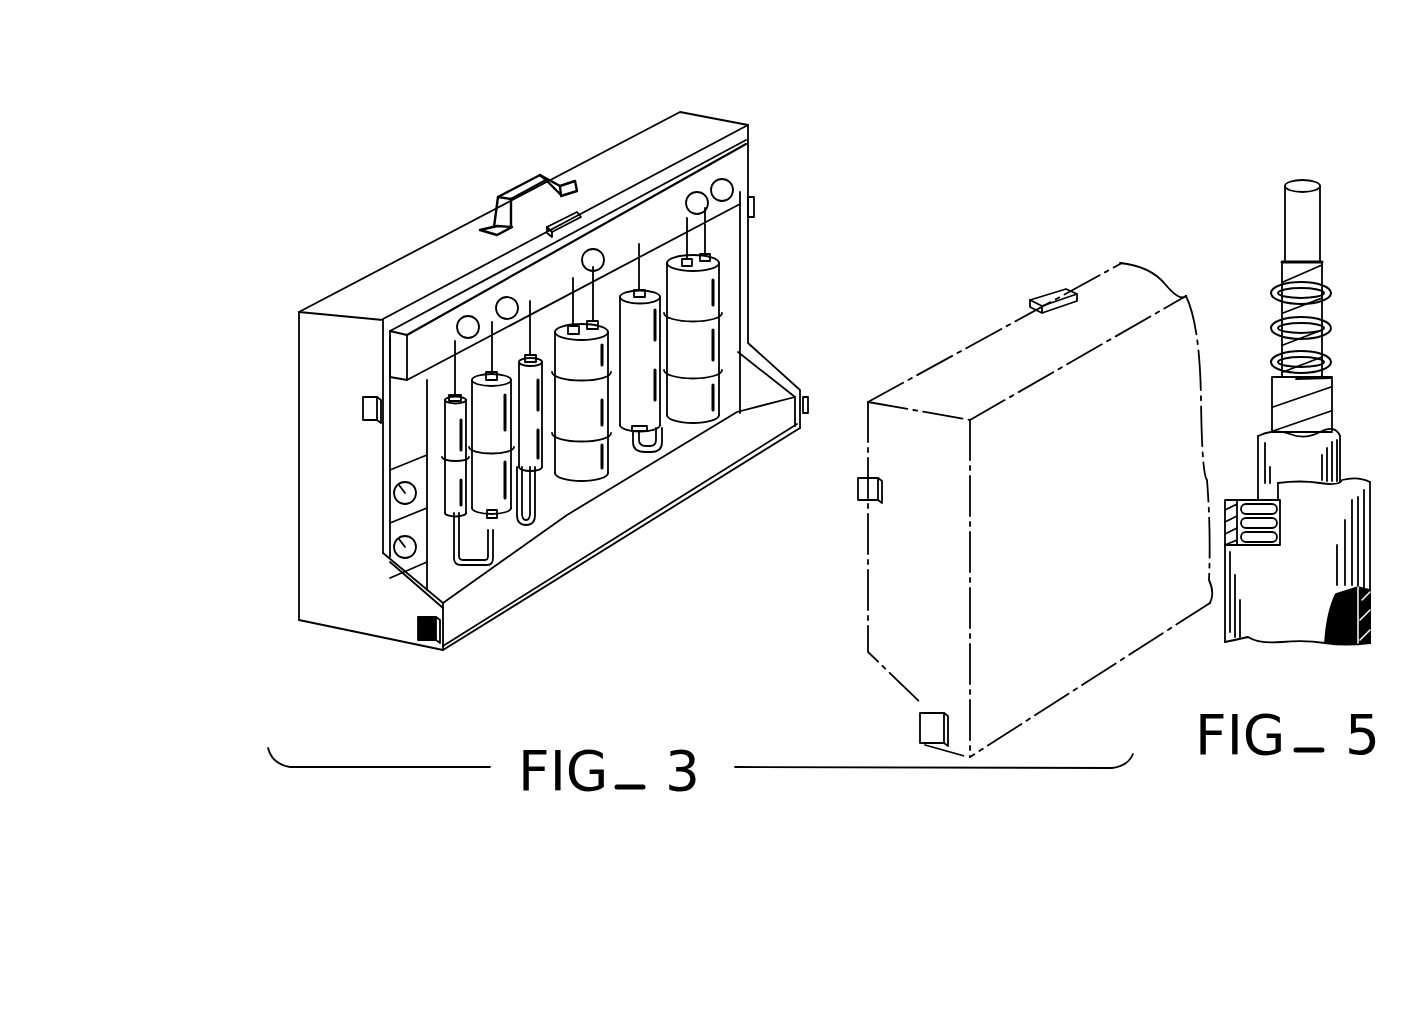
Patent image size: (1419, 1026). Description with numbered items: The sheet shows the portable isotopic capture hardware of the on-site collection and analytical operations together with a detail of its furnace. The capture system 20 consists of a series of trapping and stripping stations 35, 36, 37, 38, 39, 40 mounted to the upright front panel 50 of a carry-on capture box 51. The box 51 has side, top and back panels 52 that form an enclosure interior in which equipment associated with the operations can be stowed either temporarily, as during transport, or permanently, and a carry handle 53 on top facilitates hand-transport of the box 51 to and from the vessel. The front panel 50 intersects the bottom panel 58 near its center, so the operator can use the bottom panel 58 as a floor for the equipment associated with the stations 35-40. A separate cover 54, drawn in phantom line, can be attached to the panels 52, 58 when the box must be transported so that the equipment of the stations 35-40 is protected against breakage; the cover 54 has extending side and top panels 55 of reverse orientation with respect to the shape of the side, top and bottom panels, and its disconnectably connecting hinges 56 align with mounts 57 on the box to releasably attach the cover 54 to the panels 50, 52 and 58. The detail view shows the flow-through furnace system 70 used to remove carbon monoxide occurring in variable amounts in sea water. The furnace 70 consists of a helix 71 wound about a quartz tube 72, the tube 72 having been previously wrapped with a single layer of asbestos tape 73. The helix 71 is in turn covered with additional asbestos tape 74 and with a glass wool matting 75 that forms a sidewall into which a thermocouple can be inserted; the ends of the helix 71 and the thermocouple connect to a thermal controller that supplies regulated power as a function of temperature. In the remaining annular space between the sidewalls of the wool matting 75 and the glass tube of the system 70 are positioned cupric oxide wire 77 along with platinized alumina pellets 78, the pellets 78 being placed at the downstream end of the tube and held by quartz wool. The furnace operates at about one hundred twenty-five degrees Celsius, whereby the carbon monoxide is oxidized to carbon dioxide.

In FIG. 3, the capture system 20 is at (414, 296).
In FIG. 3, the trapping and stripping station 35 is at (450, 522).
In FIG. 3, the trapping and stripping station 36 is at (497, 517).
In FIG. 3, the trapping and stripping station 37 is at (538, 465).
In FIG. 3, the trapping and stripping station 38 is at (607, 473).
In FIG. 3, the trapping and stripping station 39 is at (633, 447).
In FIG. 3, the trapping and stripping station 40 is at (715, 414).
In FIG. 3, the upright front panel 50 is at (432, 540).
In FIG. 3, the carry-on capture box 51 is at (316, 304).
In FIG. 3, the side, top and back panels 52 is at (307, 550).
In FIG. 3, the carry handle 53 is at (526, 186).
In FIG. 3, the cover 54 is at (1070, 656).
In FIG. 3, the extending side and top panels 55 is at (921, 372).
In FIG. 3, the disconnectably connecting hinges 56 is at (1050, 290).
In FIG. 3, the mounts 57 is at (587, 210).
In FIG. 3, the bottom panel 58 is at (515, 577).
In FIG. 5, the flow-through furnace system 70 is at (1258, 216).
In FIG. 5, the helix 71 is at (1333, 304).
In FIG. 5, the quartz tube 72 is at (1321, 197).
In FIG. 5, the asbestos tape 73 is at (1323, 274).
In FIG. 5, the additional asbestos tape 74 is at (1333, 405).
In FIG. 5, the glass wool matting 75 is at (1340, 453).
In FIG. 5, the cupric oxide wire 77 is at (1254, 500).
In FIG. 5, the platinized alumina pellets 78 is at (1341, 652).